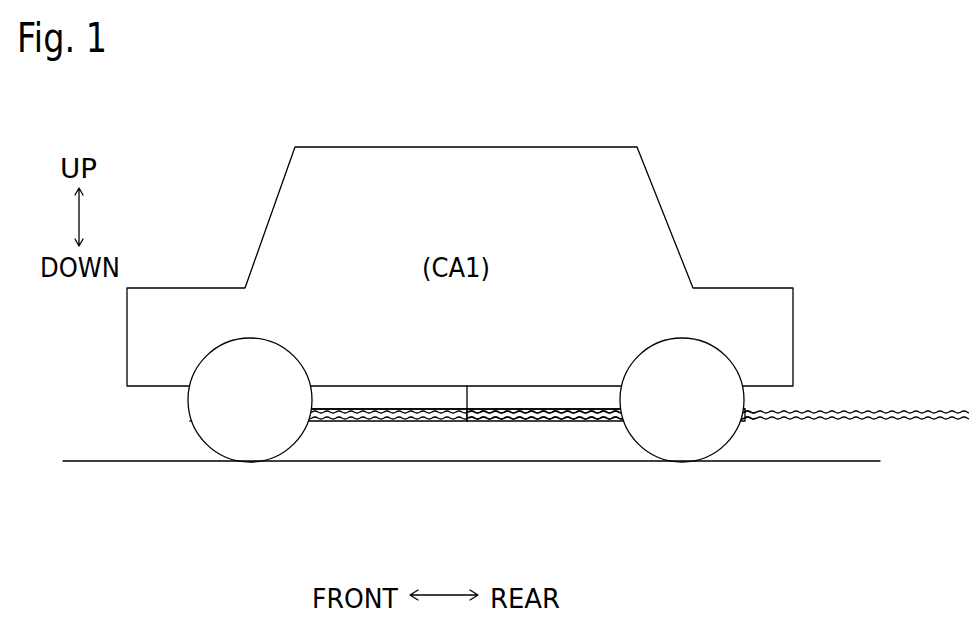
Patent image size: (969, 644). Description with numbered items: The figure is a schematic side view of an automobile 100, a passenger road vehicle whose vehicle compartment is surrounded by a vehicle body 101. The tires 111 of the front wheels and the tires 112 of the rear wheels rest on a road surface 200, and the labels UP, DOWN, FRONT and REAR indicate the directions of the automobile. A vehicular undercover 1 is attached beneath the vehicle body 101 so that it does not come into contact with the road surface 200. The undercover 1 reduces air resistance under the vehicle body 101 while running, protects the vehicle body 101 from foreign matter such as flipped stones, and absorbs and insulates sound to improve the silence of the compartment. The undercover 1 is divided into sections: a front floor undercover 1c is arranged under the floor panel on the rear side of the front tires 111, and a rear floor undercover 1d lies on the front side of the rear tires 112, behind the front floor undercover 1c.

The automobile 100 is at (548, 334).
The vehicle body 101 is at (768, 386).
The tires of the front wheels 111 is at (250, 447).
The tires of the rear wheels 112 is at (677, 447).
The vehicular undercover 1 is at (579, 467).
The front floor undercover 1c is at (412, 422).
The rear floor undercover 1d is at (583, 422).
The road surface 200 is at (90, 461).